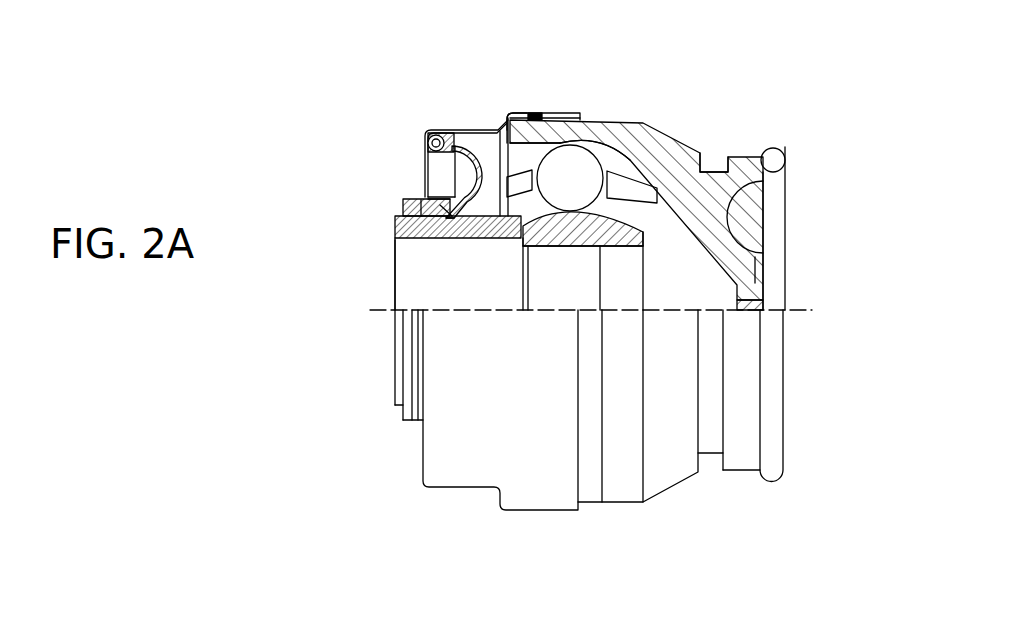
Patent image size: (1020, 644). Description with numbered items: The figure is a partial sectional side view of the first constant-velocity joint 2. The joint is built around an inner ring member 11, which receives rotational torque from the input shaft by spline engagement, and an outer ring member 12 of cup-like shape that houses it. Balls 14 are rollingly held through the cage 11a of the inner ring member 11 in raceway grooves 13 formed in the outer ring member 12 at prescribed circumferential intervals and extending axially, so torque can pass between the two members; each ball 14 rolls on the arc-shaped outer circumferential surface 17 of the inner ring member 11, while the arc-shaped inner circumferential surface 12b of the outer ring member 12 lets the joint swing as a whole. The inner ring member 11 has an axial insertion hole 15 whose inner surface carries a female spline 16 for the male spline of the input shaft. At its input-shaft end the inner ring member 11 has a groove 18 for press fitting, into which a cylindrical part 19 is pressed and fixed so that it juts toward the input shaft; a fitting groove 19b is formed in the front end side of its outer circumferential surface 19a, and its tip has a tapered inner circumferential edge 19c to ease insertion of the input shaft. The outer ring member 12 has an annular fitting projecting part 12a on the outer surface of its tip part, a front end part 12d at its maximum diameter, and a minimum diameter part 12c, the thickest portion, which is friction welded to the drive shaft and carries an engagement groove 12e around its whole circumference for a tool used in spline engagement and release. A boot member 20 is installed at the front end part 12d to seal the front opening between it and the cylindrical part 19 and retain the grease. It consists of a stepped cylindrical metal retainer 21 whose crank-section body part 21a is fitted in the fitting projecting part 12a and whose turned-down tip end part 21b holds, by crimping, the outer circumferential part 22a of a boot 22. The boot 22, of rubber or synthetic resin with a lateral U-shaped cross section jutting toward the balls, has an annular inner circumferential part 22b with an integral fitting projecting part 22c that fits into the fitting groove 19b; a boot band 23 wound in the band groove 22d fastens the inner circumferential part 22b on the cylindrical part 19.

The first constant-velocity joint 2 is at (374, 403).
The inner ring member 11 is at (640, 237).
The cage 11a is at (640, 193).
The outer ring member 12 is at (670, 141).
The fitting projecting part 12a is at (524, 150).
The inner circumferential surface 12b is at (612, 145).
The minimum diameter part 12c is at (758, 150).
The front end part 12d is at (506, 122).
The engagement groove 12e is at (714, 165).
The raceway grooves 13 is at (531, 112).
The balls 14 is at (577, 170).
The insertion hole 15 is at (610, 250).
The female spline 16 is at (567, 249).
The outer circumferential surface 17 is at (633, 222).
The groove for press fitting 18 is at (518, 242).
The cylindrical part 19 is at (386, 226).
The outer circumferential surface 19a is at (480, 241).
The fitting groove 19b is at (402, 208).
The inner circumferential edge 19c is at (396, 241).
The boot member 20 is at (393, 13).
The retainer 21 is at (503, 128).
The body part 21a is at (552, 112).
The tip end part 21b is at (424, 131).
The boot 22 is at (455, 155).
The outer circumferential part 22a is at (436, 135).
The inner circumferential part 22b is at (423, 242).
The fitting projecting part 22c is at (442, 203).
The band groove 22d is at (405, 199).
The boot band 23 is at (459, 242).